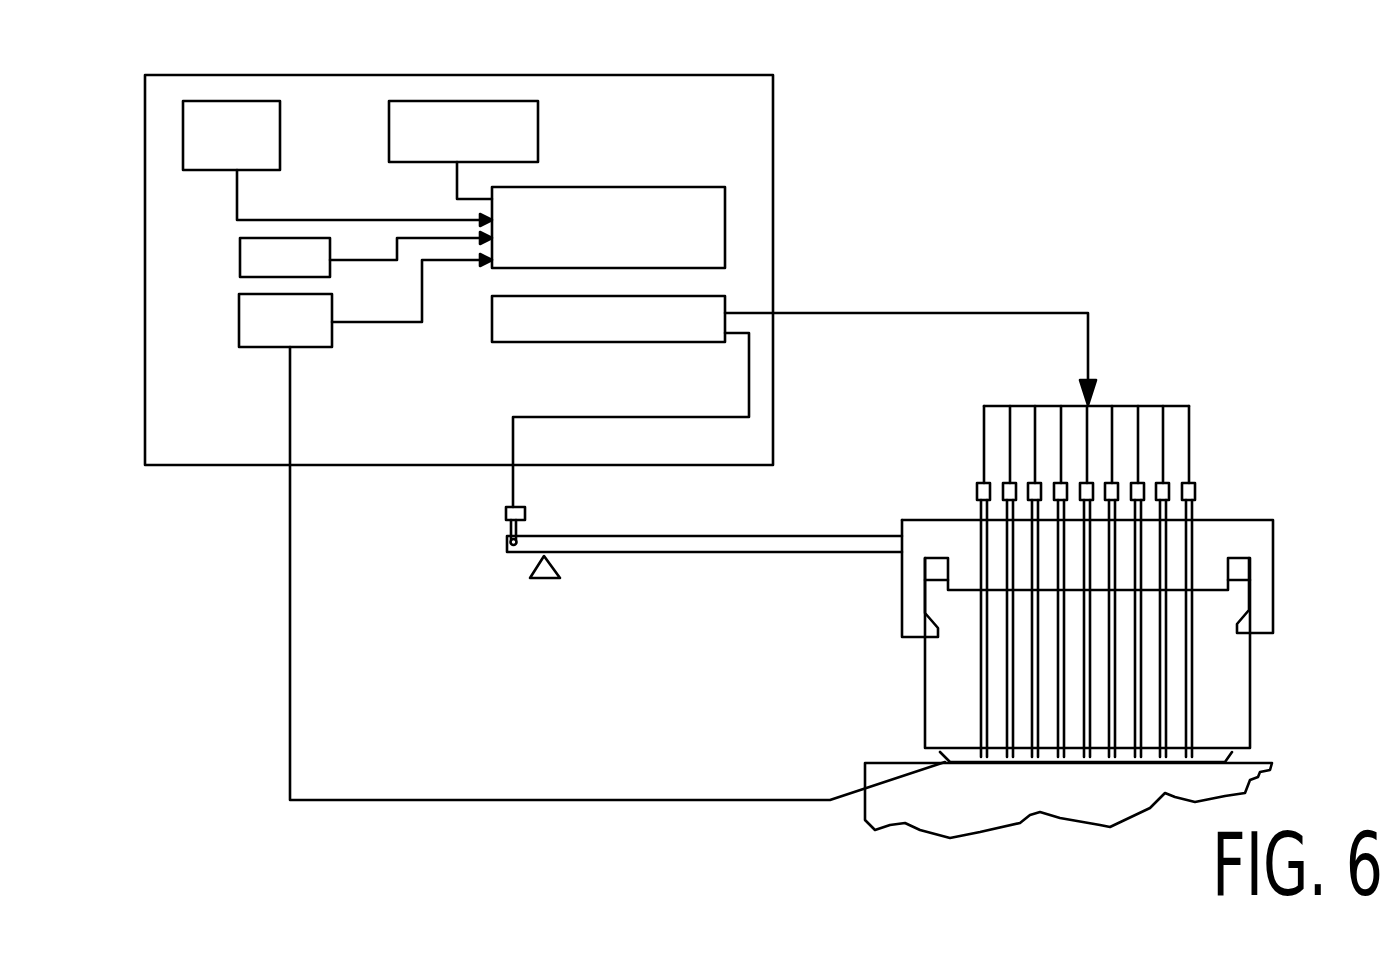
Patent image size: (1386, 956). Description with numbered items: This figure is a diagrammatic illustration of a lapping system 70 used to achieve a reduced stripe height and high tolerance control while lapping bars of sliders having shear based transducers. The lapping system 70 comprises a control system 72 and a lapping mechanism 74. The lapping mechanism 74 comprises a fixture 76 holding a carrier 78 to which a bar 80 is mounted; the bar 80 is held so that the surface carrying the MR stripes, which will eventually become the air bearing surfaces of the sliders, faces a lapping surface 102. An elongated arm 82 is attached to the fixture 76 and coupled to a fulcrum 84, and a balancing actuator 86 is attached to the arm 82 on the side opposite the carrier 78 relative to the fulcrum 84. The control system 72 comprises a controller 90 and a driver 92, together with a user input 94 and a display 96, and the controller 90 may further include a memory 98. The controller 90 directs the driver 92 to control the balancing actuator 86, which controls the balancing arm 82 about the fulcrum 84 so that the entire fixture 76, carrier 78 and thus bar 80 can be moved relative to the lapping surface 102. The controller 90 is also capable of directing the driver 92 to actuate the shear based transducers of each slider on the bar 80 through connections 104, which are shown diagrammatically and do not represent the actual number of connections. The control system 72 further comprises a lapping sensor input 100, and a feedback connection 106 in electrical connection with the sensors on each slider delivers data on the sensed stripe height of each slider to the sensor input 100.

The lapping system 70 is at (950, 192).
The control system 72 is at (392, 75).
The lapping mechanism 74 is at (785, 651).
The fixture 76 is at (1250, 522).
The carrier 78 is at (1236, 668).
The bar 80 is at (1003, 753).
The elongated arm 82 is at (770, 535).
The fulcrum 84 is at (545, 580).
The balancing actuator 86 is at (506, 513).
The controller 90 is at (655, 187).
The driver 92 is at (540, 342).
The user input 94 is at (281, 128).
The display 96 is at (538, 113).
The memory 98 is at (240, 258).
The lapping sensor input 100 is at (315, 347).
The lapping surface 102 is at (1068, 800).
The connections 104 is at (1138, 372).
The feedback connection 106 is at (290, 625).